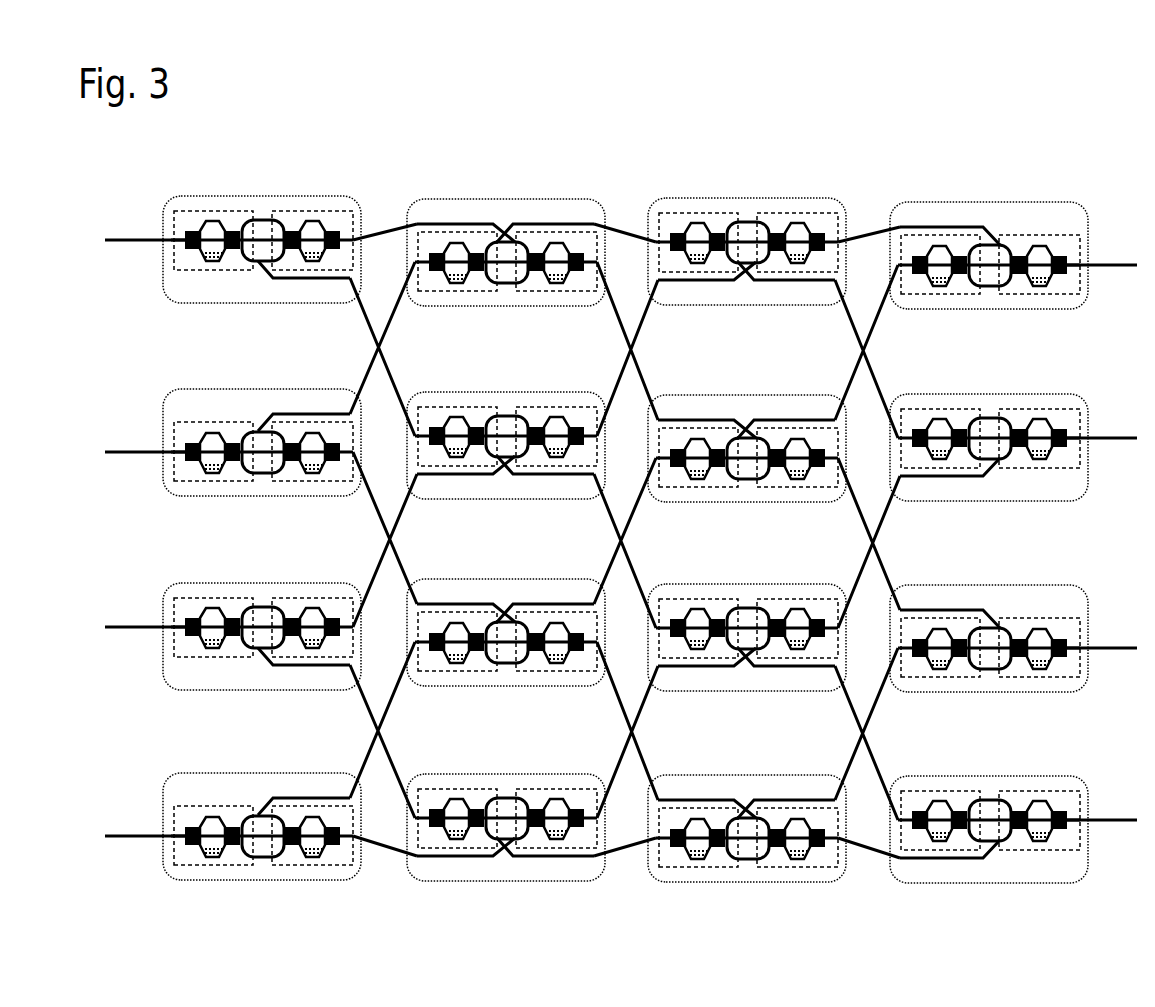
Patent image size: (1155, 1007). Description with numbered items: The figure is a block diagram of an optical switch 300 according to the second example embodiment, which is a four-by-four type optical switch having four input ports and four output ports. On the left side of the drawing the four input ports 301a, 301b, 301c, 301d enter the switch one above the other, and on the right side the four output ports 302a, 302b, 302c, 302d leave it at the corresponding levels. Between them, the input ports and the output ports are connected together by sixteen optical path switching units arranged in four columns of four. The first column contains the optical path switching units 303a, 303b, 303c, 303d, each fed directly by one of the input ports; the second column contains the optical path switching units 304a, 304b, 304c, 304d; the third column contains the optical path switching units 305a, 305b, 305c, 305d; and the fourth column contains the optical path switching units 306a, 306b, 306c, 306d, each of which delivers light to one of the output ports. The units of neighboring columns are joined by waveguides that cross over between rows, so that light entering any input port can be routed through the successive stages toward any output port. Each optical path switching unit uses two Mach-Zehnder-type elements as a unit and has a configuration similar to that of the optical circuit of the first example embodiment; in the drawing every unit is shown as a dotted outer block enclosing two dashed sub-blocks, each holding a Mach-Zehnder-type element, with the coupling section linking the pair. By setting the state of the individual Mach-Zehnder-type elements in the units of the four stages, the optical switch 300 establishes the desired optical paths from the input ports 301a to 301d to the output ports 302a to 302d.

The optical switch 300 is at (886, 163).
The input port 301a is at (118, 238).
The input port 301b is at (118, 450).
The input port 301c is at (120, 625).
The input port 301d is at (122, 834).
The output port 302a is at (1108, 263).
The output port 302b is at (1108, 436).
The output port 302c is at (1110, 646).
The output port 302d is at (1108, 818).
The optical path switching unit 303a is at (295, 195).
The optical path switching unit 303b is at (298, 394).
The optical path switching unit 303c is at (298, 578).
The optical path switching unit 303d is at (302, 772).
The optical path switching unit 304a is at (530, 197).
The optical path switching unit 304b is at (530, 393).
The optical path switching unit 304c is at (530, 580).
The optical path switching unit 304d is at (530, 773).
The optical path switching unit 305a is at (783, 198).
The optical path switching unit 305b is at (783, 398).
The optical path switching unit 305c is at (785, 582).
The optical path switching unit 305d is at (785, 773).
The optical path switching unit 306a is at (1033, 203).
The optical path switching unit 306b is at (1035, 394).
The optical path switching unit 306c is at (1033, 583).
The optical path switching unit 306d is at (1033, 773).